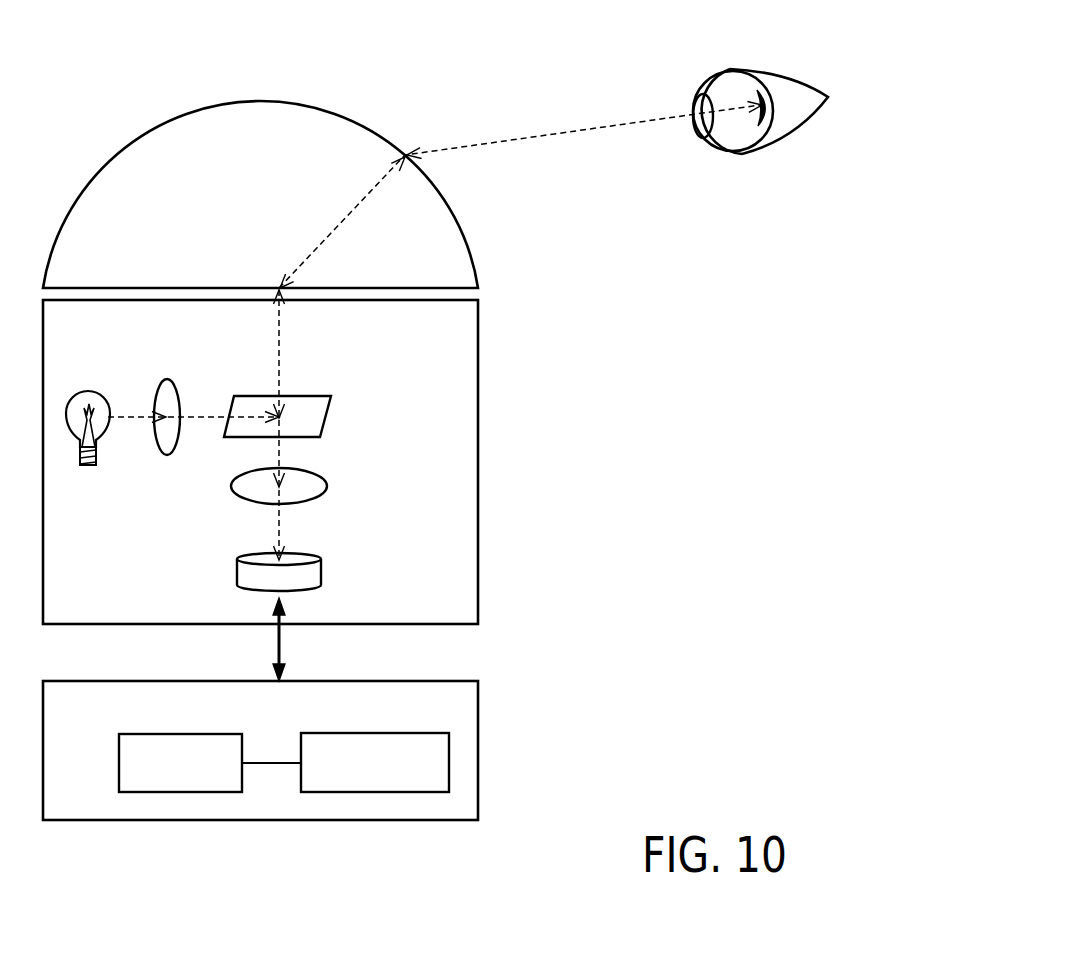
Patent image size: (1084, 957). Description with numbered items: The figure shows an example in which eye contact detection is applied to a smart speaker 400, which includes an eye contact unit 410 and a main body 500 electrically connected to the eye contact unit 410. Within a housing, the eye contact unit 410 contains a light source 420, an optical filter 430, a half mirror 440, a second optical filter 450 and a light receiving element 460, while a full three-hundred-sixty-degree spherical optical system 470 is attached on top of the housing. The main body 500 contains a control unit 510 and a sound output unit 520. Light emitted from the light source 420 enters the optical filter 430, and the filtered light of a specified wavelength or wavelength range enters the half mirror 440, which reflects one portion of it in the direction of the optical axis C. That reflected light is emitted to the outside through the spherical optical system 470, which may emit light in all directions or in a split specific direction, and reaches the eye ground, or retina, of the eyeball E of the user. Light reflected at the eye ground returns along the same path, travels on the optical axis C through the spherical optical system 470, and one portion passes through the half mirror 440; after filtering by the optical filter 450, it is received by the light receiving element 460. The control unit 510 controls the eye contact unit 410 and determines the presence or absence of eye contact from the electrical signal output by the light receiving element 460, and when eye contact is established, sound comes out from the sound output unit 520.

The smart speaker 400 is at (152, 51).
The eye contact unit 410 is at (480, 410).
The light source 420 is at (87, 388).
The optical filter 430 is at (167, 378).
The half mirror 440 is at (333, 408).
The optical filter 450 is at (333, 486).
The light receiving element 460 is at (322, 573).
The full 360-degree spherical optical system 470 is at (325, 104).
The main body 500 is at (480, 740).
The control unit 510 is at (224, 733).
The sound output unit 520 is at (424, 733).
The eyeball E is at (732, 67).
The optical axis C is at (289, 425).